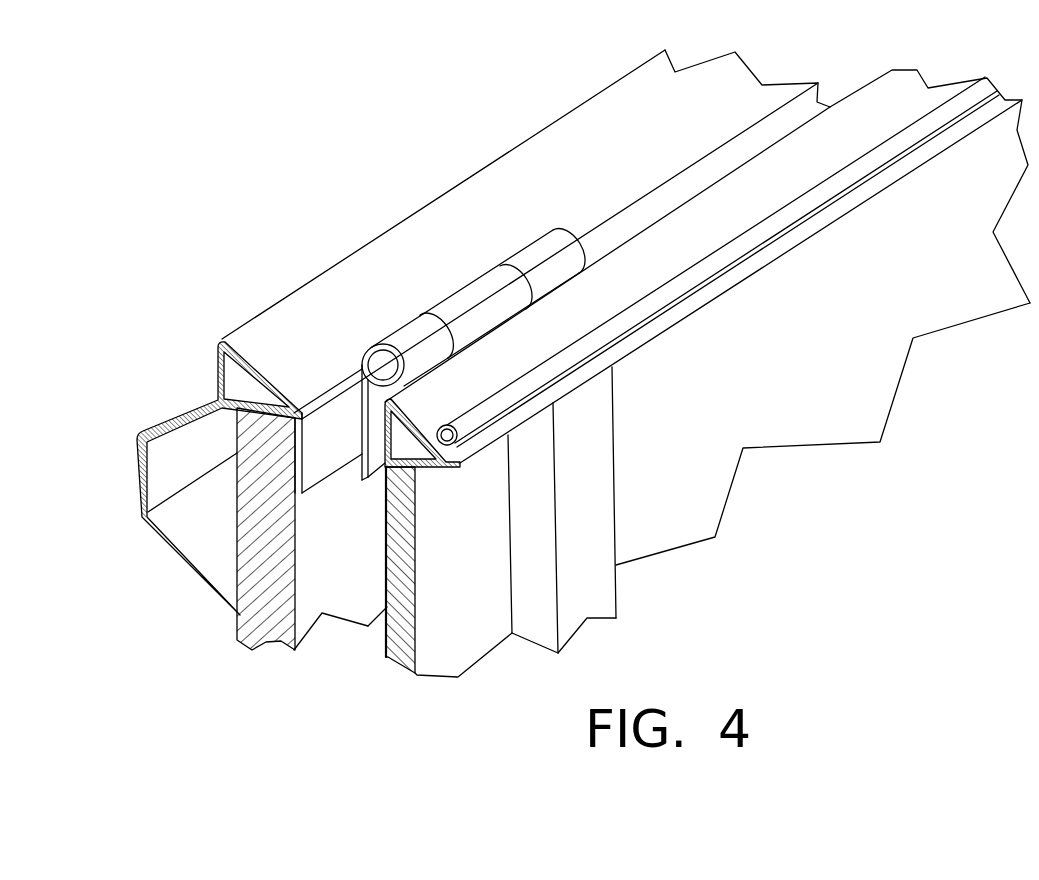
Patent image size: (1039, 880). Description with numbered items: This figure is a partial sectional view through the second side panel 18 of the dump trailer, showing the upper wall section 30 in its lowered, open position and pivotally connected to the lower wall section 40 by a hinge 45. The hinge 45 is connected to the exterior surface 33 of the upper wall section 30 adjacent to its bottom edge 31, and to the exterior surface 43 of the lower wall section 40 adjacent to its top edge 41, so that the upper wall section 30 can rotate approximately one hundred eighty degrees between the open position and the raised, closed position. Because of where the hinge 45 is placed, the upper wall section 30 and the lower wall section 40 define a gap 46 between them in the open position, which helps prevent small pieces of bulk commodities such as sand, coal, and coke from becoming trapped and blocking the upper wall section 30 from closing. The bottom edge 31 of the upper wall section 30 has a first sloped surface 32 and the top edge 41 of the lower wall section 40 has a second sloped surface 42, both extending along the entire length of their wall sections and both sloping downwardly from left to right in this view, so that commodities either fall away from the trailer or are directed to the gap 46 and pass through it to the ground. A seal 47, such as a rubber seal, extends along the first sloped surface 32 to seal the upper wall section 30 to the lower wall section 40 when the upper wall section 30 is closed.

The second side panel 18 is at (327, 718).
The upper wall section 30 is at (400, 668).
The bottom edge 31 is at (413, 470).
The first sloped surface 32 is at (473, 368).
The exterior surface 33 is at (387, 638).
The lower wall section 40 is at (268, 647).
The top edge 41 is at (252, 398).
The second sloped surface 42 is at (307, 323).
The exterior surface 43 is at (305, 590).
The hinge 45 is at (468, 297).
The gap 46 is at (610, 233).
The seal 47 is at (460, 420).